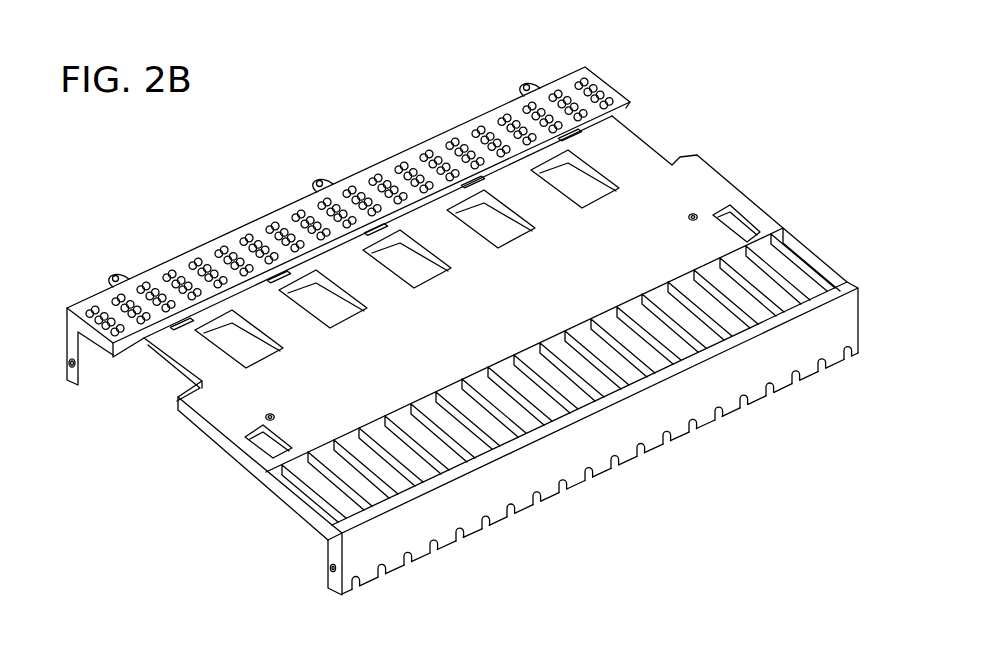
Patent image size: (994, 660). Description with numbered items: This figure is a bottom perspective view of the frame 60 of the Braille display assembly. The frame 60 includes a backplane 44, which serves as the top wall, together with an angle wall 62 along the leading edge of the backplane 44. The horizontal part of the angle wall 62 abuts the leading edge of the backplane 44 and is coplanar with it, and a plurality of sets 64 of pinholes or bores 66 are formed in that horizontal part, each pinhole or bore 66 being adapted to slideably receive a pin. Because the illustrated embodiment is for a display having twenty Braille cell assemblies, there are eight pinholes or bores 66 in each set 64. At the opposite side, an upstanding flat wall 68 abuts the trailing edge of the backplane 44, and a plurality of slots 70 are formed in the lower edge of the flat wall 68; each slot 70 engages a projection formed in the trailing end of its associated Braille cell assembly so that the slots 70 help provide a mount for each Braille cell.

The frame 60 is at (742, 98).
The backplane 44 is at (527, 298).
The angle wall 62 is at (293, 204).
The set of pinholes or bores 64 is at (150, 266).
The pinhole or bore 66 is at (433, 153).
The upstanding flat wall 68 is at (850, 323).
The slot 70 is at (638, 450).